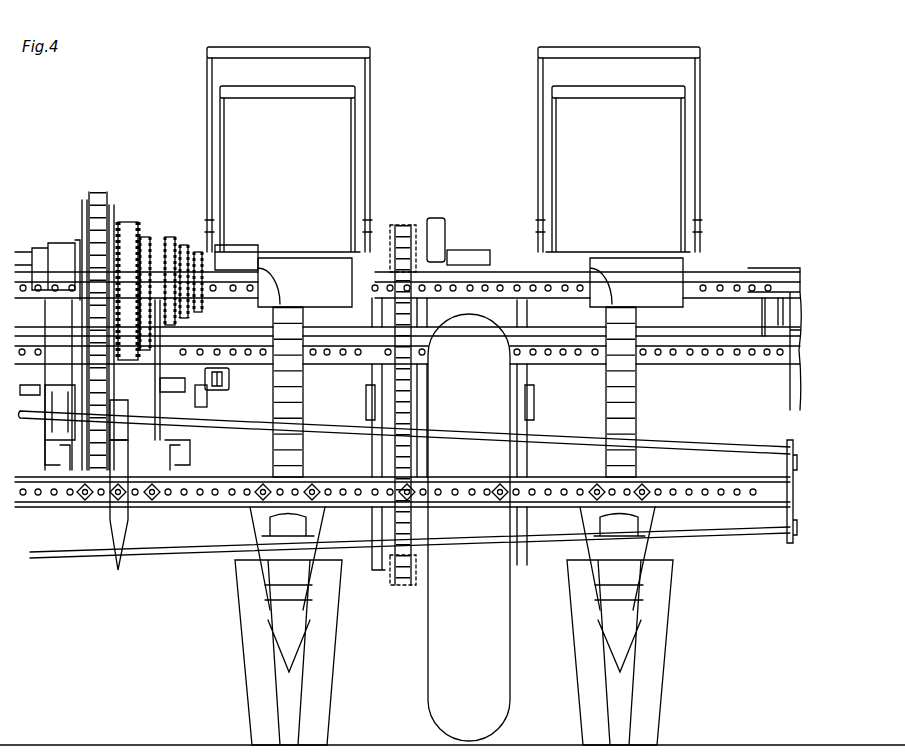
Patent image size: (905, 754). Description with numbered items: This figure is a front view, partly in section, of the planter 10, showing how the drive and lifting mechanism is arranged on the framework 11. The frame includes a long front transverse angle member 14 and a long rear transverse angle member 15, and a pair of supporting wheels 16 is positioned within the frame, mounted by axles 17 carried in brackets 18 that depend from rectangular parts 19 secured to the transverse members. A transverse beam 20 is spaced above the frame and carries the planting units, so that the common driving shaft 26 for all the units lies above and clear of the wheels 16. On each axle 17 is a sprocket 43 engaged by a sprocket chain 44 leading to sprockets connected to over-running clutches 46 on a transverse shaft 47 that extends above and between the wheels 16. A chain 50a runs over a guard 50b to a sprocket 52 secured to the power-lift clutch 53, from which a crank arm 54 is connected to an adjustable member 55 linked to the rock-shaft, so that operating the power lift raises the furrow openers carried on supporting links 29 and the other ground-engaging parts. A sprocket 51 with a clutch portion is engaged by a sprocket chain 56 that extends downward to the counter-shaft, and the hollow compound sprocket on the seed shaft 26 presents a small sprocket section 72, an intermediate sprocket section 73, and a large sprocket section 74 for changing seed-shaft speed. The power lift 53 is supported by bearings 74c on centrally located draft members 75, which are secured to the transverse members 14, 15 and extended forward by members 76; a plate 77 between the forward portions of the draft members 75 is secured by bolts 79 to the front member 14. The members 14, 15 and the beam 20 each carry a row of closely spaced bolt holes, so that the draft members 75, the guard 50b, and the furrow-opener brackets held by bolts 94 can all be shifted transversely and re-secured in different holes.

The planter 10 is at (460, 236).
The framework 11 is at (778, 265).
The front transverse angle member 14 is at (345, 500).
The rear transverse angle member 15 is at (672, 362).
The supporting wheels 16 is at (498, 652).
The axles 17 is at (527, 522).
The brackets 18 is at (382, 560).
The rectangular parts 19 is at (366, 402).
The transverse beam 20 is at (503, 296).
The common driving shaft 26 is at (528, 276).
The supporting links 29 is at (252, 530).
The sprocket 43 is at (400, 585).
The sprocket chains 44 is at (412, 402).
The over-running clutches 46 is at (436, 218).
The transverse shaft 47 is at (470, 257).
The chain 50a is at (100, 195).
The guard 50b is at (80, 215).
The sprocket 51 is at (132, 222).
The sprocket 52 is at (80, 392).
The power-lift clutch 53 is at (115, 385).
The crank arm 54 is at (207, 405).
The adjustable member 55 is at (230, 390).
The sprocket chain 56 is at (150, 235).
The small sprocket section 72 is at (198, 252).
The intermediate sprocket section 73 is at (184, 245).
The large sprocket section 74 is at (170, 237).
The bearings 74c is at (30, 385).
The draft members 75 is at (45, 455).
The members 76 is at (120, 460).
The plate 77 is at (137, 478).
The bolts 79 is at (85, 498).
The bolts 94 is at (266, 487).